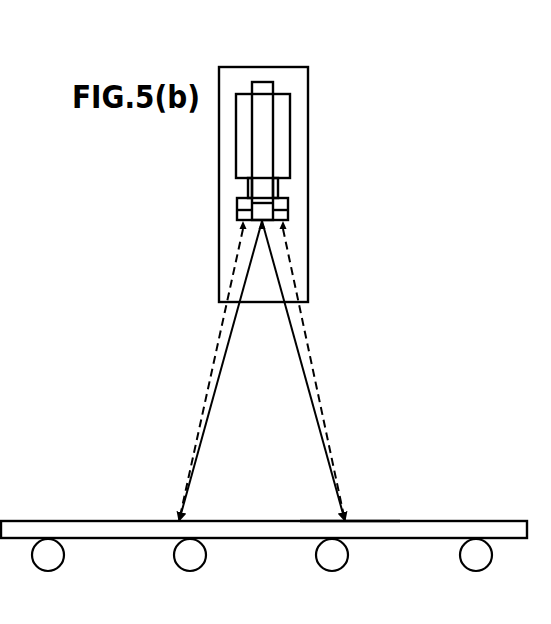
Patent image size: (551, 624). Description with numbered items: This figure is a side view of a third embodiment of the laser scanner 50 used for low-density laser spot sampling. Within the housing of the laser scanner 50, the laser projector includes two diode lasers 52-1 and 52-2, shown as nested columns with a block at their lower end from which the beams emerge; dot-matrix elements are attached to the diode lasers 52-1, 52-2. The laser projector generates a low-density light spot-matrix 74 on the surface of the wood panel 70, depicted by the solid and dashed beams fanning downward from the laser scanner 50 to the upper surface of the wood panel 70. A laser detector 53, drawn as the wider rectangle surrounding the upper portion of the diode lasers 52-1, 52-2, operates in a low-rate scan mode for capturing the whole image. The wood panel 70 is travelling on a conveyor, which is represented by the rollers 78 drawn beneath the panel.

The laser scanner 50 is at (308, 88).
The diode laser 52-1 is at (261, 82).
The diode laser 52-2 is at (275, 123).
The laser detector 53 is at (290, 156).
The wood panel 70 is at (118, 530).
The low-density light spot-matrix 74 is at (345, 521).
The rollers 78 is at (190, 555).